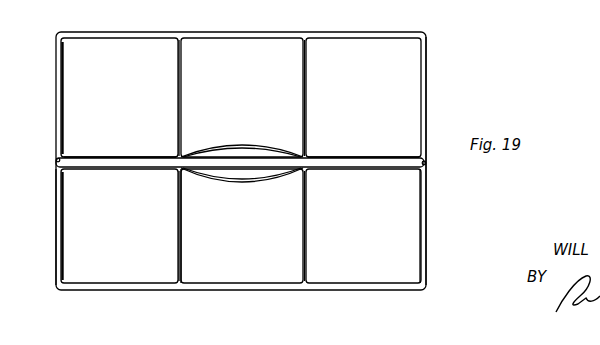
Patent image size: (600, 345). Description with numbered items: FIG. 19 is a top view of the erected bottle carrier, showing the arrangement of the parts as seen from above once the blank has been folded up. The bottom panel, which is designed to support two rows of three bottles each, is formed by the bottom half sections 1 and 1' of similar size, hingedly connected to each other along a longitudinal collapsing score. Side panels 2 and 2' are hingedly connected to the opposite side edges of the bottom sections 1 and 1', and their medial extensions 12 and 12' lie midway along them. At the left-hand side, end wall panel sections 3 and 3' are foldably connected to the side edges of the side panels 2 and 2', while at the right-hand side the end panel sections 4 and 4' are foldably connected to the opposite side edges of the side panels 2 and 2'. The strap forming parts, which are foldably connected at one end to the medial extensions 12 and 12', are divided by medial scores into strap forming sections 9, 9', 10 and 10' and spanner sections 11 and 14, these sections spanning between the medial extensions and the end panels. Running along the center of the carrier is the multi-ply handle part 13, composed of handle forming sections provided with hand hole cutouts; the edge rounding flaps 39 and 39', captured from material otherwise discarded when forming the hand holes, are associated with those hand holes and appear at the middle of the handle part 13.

The bottom half section 1 is at (242, 150).
The bottom half section 1' is at (213, 226).
The side panel 2 is at (241, 85).
The side panel 2' is at (241, 244).
The end wall panel section 3 is at (223, 161).
The end wall panel section 3' is at (37, 227).
The end panel section 4 is at (440, 161).
The end panel section 4' is at (437, 226).
The strap forming section 9 is at (163, 98).
The strap forming section 9' is at (161, 226).
The strap forming section 10 is at (324, 98).
The strap forming section 10' is at (325, 226).
The spanner section 11 is at (118, 157).
The medial extension 12 is at (242, 85).
The medial extension 12' is at (242, 244).
The multi-ply handle part 13 is at (389, 172).
The spanner section 14 is at (365, 135).
The edge rounding flap 39 is at (242, 140).
The edge rounding flap 39' is at (242, 191).